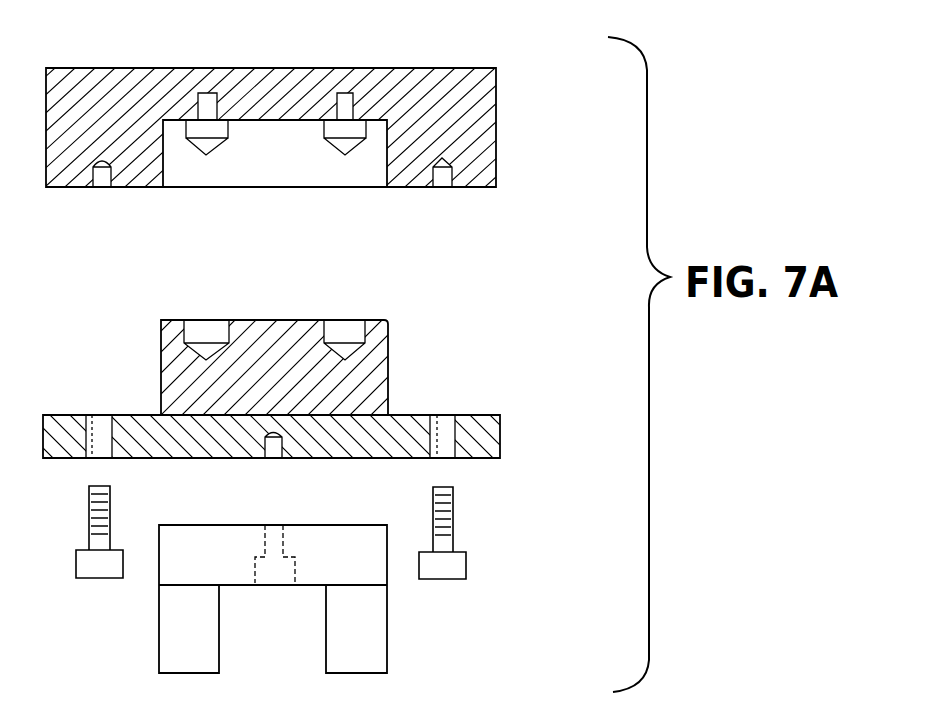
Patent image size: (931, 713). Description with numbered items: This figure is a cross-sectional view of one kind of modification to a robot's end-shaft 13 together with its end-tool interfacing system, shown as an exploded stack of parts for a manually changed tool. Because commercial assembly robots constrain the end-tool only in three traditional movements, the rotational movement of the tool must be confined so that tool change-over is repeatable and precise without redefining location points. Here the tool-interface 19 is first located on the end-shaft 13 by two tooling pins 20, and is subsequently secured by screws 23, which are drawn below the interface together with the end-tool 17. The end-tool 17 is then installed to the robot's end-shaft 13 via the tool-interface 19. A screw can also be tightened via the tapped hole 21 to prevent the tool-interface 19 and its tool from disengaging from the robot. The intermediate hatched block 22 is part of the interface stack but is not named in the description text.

The robot's end-shaft 13 is at (442, 113).
The tooling pins 20 is at (343, 106).
The tapped hole 21 is at (445, 178).
The block 22 is at (347, 337).
The tool-interface 19 is at (477, 437).
The screws 23 is at (447, 532).
The end-tool 17 is at (379, 640).